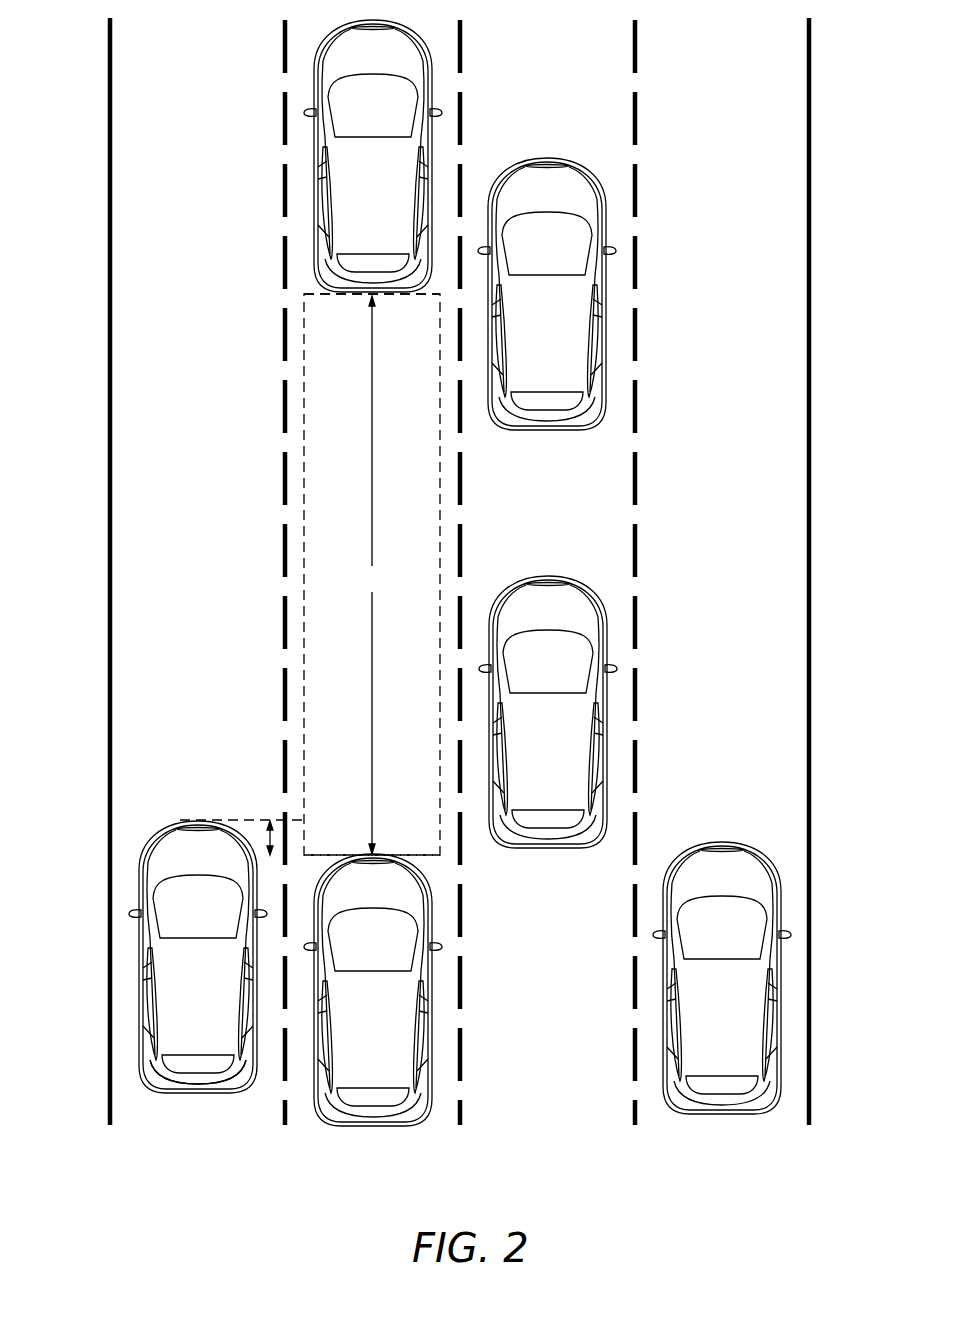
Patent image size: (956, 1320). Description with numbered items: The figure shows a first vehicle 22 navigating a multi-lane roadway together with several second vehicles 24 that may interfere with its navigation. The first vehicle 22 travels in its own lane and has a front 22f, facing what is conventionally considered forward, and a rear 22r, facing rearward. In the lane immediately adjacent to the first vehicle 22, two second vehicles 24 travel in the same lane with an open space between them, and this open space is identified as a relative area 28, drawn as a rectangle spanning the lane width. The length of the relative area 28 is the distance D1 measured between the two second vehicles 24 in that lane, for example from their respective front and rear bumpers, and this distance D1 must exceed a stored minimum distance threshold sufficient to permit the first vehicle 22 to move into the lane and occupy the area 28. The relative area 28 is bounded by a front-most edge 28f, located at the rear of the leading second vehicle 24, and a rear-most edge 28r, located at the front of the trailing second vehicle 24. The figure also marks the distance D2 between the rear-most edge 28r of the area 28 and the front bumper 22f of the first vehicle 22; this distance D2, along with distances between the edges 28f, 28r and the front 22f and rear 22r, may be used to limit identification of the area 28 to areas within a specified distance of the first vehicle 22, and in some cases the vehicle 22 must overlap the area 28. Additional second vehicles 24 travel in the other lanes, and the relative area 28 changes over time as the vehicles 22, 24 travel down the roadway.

The first vehicle 22 is at (137, 905).
The front 22f is at (198, 819).
The rear 22r is at (200, 1094).
The second vehicle 24 is at (432, 92).
The relative area 28 is at (304, 384).
The front-most edge 28f is at (382, 298).
The rear-most edge 28r is at (382, 852).
The distance D1 is at (373, 575).
The distance D2 is at (268, 822).